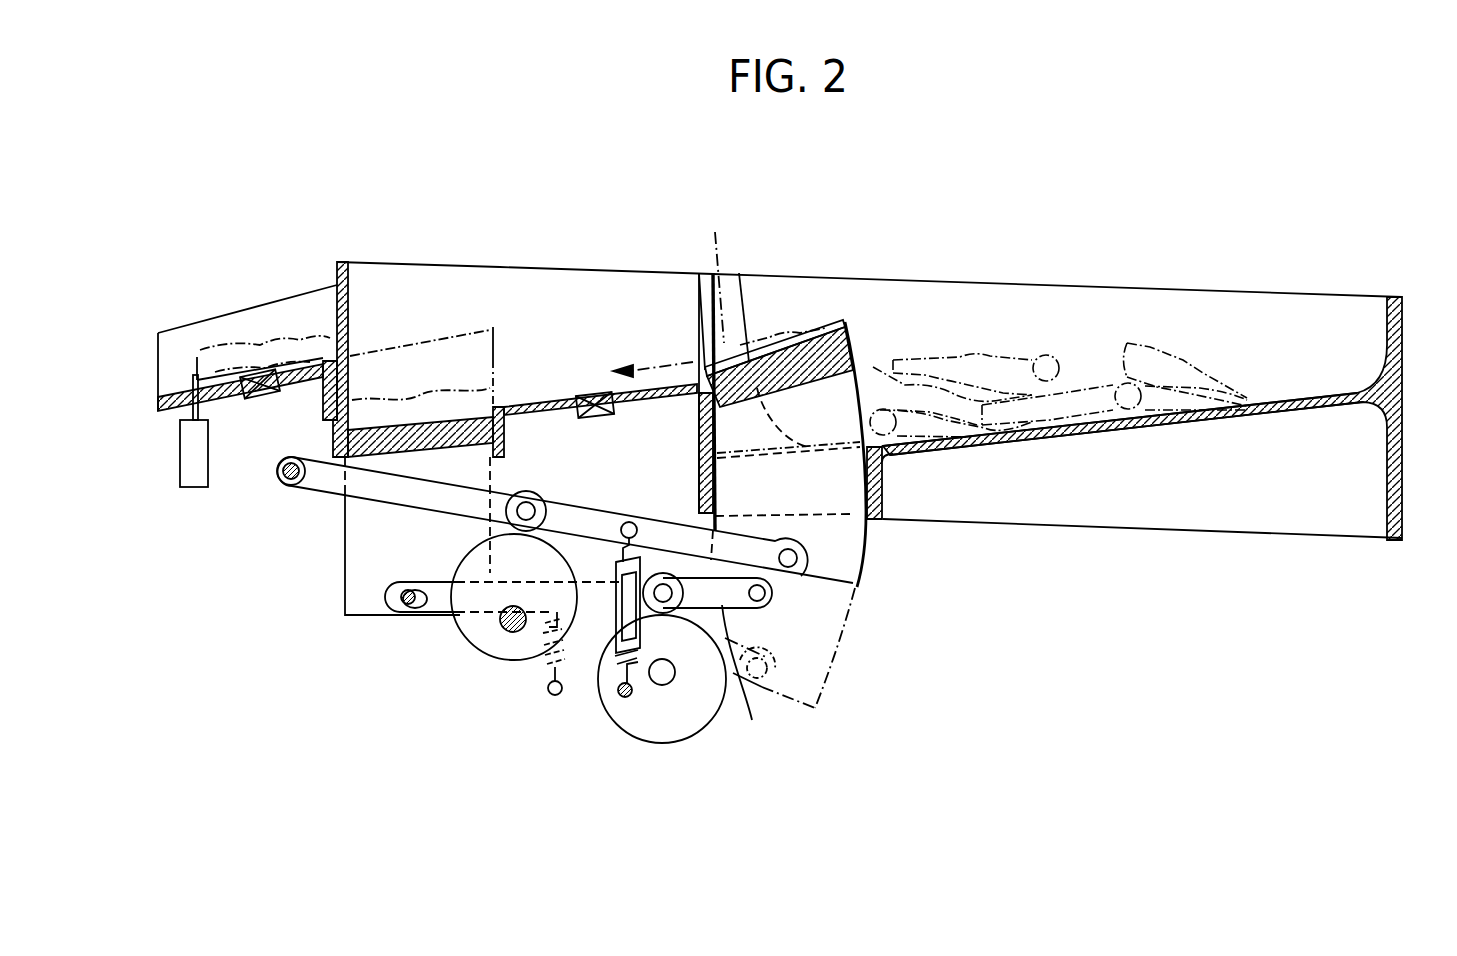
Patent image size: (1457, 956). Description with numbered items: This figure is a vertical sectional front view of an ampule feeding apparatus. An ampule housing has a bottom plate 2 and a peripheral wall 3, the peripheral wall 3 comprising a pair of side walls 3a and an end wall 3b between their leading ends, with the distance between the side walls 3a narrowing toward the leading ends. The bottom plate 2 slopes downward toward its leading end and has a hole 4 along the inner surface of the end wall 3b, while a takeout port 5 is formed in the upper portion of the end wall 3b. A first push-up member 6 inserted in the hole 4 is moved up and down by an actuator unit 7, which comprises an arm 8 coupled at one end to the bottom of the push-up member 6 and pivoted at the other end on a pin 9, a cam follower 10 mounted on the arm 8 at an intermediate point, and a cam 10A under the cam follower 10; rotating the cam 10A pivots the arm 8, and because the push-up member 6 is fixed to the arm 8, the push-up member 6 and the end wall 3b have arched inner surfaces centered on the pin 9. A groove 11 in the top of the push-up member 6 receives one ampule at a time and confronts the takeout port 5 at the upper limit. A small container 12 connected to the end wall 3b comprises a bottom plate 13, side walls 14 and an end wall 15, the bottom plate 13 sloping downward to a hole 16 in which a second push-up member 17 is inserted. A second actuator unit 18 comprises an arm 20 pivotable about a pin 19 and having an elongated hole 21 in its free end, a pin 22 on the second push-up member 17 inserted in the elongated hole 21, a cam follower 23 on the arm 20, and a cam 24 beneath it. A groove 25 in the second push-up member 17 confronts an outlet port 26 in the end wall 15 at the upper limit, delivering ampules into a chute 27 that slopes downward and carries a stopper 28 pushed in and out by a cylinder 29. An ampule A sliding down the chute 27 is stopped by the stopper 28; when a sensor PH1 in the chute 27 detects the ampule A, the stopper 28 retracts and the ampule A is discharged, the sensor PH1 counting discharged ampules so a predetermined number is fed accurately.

The bottom plate 2 is at (1153, 430).
The peripheral wall 3 is at (1400, 318).
The side walls 3a is at (1258, 303).
The end wall 3b is at (742, 303).
The hole 4 is at (843, 505).
The takeout port 5 is at (728, 290).
The first push-up member 6 is at (866, 470).
The actuator unit 7 is at (382, 504).
The arm 8 is at (404, 500).
The pin 9 is at (289, 487).
The cam follower 10 is at (535, 497).
The cam 10A is at (488, 638).
The groove 11 is at (835, 322).
The small container 12 is at (415, 262).
The bottom plate 13 is at (558, 400).
The side walls 14 is at (543, 278).
The end wall 15 is at (338, 283).
The hole 16 is at (497, 425).
The second push-up member 17 is at (394, 428).
The second actuator unit 18 is at (631, 739).
The pin 19 is at (770, 598).
The arm 20 is at (743, 681).
The elongated hole 21 is at (420, 607).
The pin 22 is at (393, 608).
The cam follower 23 is at (667, 573).
The cam 24 is at (677, 730).
The groove 25 is at (438, 418).
The outlet port 26 is at (337, 312).
The chute 27 is at (172, 410).
The stopper 28 is at (193, 375).
The cylinder 29 is at (196, 488).
The sensor PH1 is at (260, 397).
The ampule A is at (713, 271).